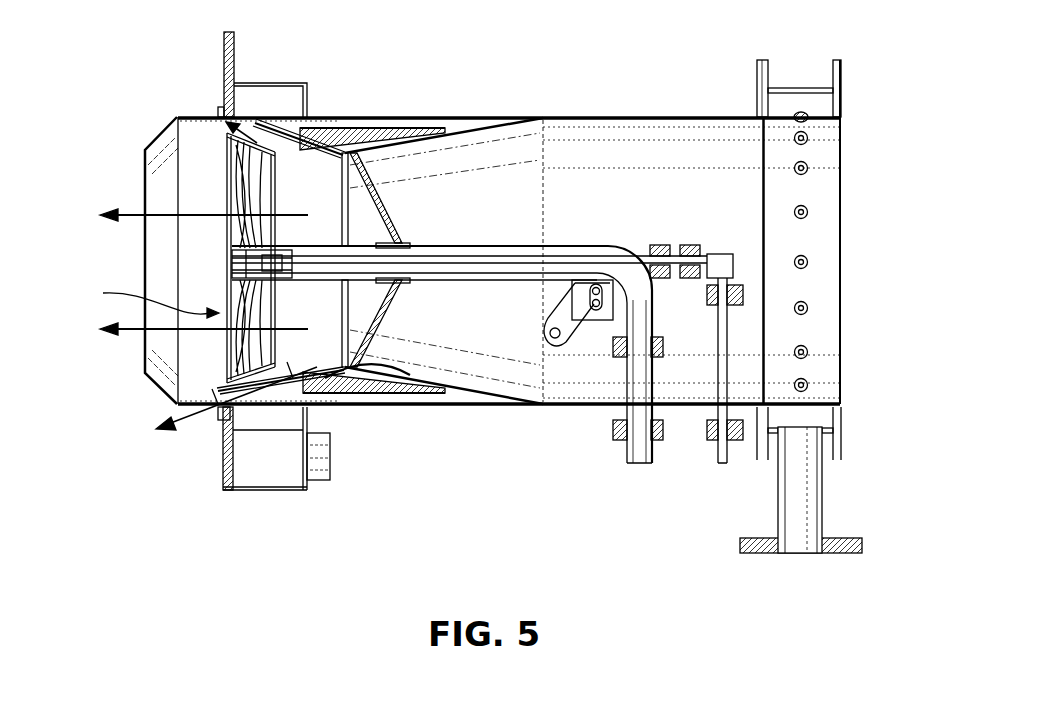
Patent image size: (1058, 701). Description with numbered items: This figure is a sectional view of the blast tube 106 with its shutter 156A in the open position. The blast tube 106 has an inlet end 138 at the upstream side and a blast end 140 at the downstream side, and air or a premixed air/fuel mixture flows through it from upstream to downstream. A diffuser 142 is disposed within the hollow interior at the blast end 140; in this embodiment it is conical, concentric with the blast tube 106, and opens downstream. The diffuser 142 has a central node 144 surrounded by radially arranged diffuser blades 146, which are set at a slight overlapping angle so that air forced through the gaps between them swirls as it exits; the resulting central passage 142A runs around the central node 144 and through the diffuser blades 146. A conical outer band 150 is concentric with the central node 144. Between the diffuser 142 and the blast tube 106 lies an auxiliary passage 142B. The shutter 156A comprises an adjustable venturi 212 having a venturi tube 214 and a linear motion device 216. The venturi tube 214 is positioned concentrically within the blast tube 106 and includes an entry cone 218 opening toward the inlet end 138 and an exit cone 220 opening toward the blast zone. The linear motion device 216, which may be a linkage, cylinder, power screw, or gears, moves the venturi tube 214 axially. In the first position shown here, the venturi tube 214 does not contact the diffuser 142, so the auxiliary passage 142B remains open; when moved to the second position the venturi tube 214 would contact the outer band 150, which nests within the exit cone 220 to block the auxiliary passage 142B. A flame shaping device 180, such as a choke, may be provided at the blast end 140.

The blast tube 106 is at (580, 115).
The inlet end 138 is at (673, 132).
The blast end 140 is at (360, 115).
The diffuser 142 is at (140, 300).
The central passage 142A is at (163, 213).
The auxiliary passage 142B is at (247, 133).
The central node 144 is at (232, 262).
The diffuser blades 146 is at (240, 298).
The outer band 150 is at (245, 175).
The shutter 156A is at (388, 404).
The flame shaping device 180 is at (143, 373).
The adjustable venturi 212 is at (397, 366).
The venturi tube 214 is at (417, 150).
The linear motion device 216 is at (590, 320).
The entry cone 218 is at (481, 127).
The exit cone 220 is at (288, 128).